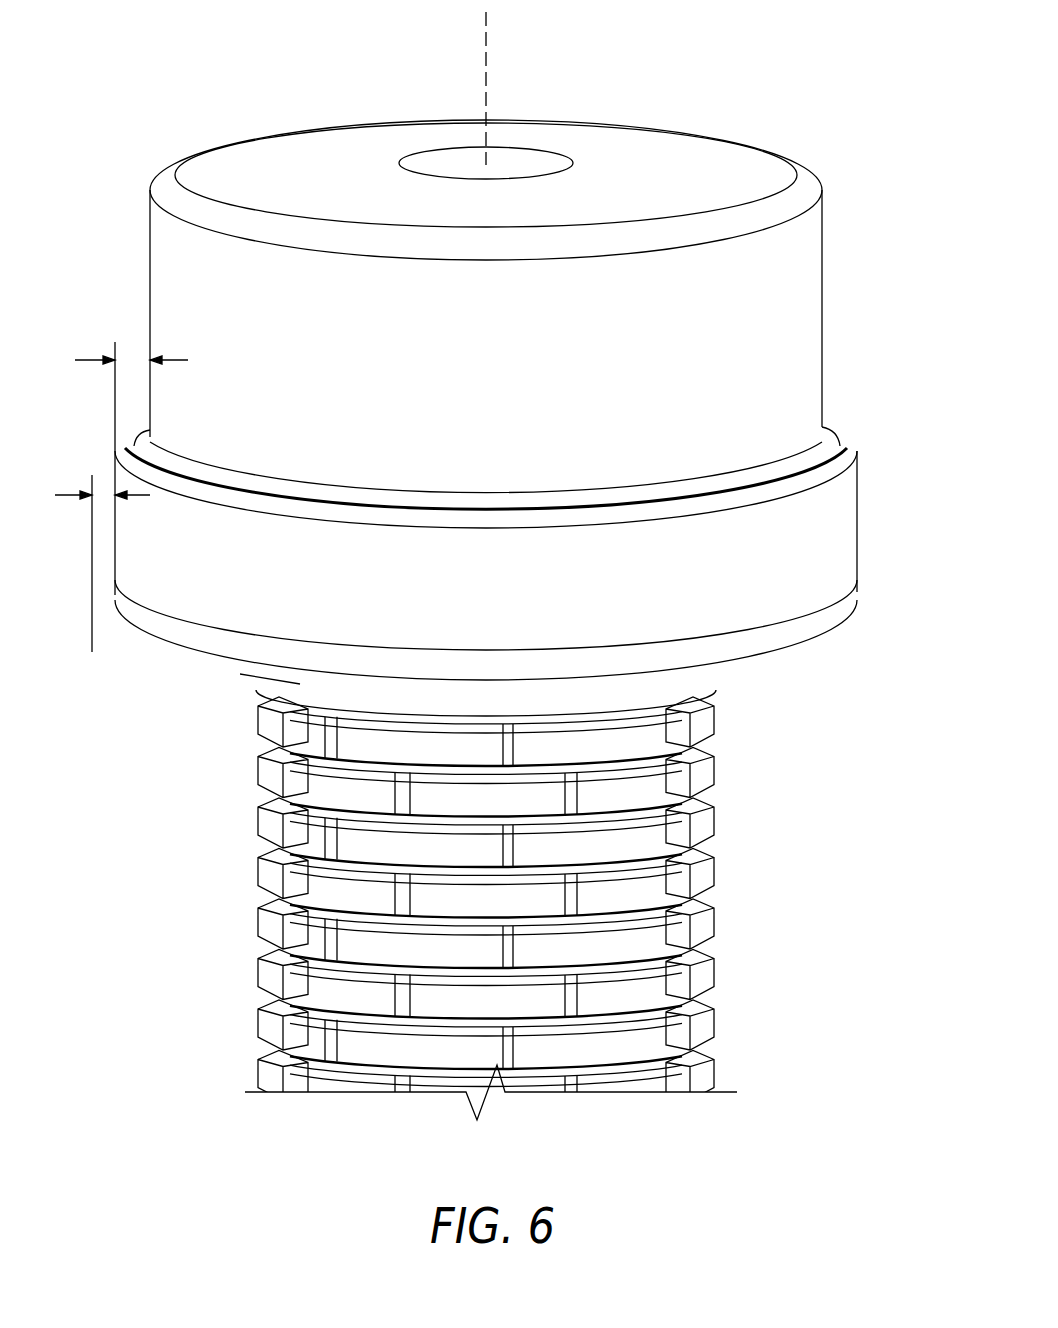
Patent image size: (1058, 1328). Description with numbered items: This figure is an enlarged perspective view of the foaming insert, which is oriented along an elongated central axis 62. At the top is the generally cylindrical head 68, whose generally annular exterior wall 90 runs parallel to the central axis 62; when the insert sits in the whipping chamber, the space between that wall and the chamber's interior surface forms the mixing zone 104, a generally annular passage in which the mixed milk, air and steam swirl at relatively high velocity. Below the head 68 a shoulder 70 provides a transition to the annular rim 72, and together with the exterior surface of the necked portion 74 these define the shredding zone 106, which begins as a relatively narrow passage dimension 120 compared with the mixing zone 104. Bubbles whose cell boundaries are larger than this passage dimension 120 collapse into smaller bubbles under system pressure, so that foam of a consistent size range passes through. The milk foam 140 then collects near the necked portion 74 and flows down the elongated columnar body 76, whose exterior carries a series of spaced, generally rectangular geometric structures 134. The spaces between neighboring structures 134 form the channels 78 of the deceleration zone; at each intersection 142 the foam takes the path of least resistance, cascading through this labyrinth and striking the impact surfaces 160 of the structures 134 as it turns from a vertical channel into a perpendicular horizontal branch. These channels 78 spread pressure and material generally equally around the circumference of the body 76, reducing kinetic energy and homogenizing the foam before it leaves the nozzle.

The central axis 62 is at (486, 50).
The head 68 is at (147, 177).
The shoulder 70 is at (842, 448).
The rim 72 is at (110, 507).
The necked portion 74 is at (170, 643).
The elongated columnar body 76 is at (490, 896).
The channels 78 is at (268, 792).
The exterior wall 90 is at (165, 260).
The mixing zone 104 is at (133, 389).
The shredding zone 106 is at (102, 493).
The passage dimension 120 is at (130, 358).
The geometric structures 134 is at (432, 907).
The milk foam 140 is at (248, 674).
The intersection 142 is at (348, 768).
The impact surfaces 160 is at (700, 910).